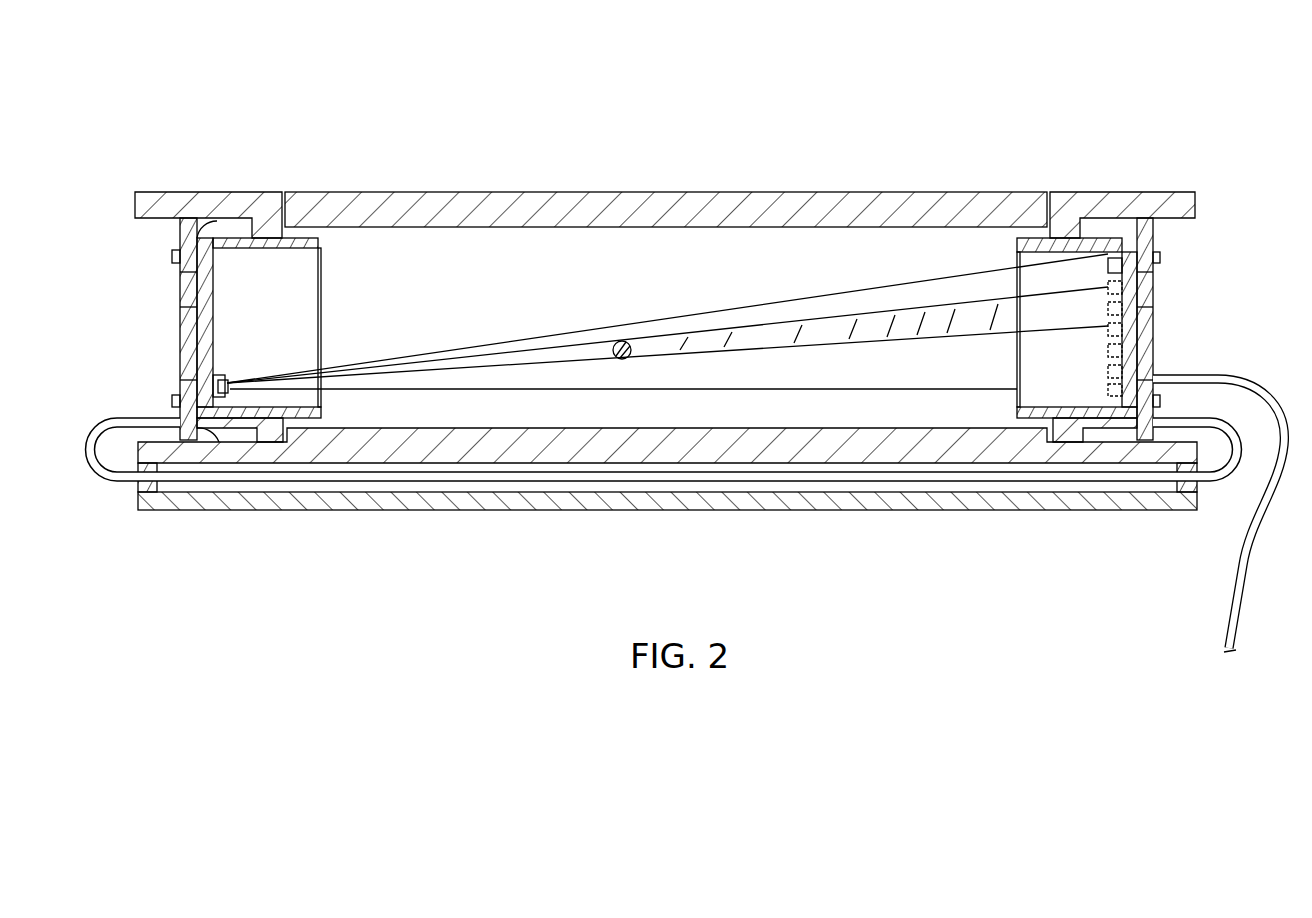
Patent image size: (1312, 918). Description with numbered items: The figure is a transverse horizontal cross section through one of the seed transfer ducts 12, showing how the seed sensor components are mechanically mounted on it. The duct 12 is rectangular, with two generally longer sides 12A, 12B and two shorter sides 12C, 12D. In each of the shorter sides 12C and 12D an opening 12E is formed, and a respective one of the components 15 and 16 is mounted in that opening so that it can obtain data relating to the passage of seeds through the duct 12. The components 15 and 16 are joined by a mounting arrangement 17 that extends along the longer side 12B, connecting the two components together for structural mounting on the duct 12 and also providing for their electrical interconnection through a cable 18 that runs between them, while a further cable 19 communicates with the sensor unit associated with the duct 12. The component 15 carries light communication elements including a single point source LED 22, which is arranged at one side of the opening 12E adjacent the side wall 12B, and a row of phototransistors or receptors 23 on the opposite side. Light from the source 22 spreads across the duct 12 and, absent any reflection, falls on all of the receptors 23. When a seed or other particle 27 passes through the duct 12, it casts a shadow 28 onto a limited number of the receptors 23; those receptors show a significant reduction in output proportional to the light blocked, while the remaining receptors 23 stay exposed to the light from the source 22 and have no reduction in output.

The seed transfer duct 12 is at (666, 351).
The longer side of duct 12A is at (747, 190).
The longer side of duct 12B is at (778, 465).
The shorter side of duct 12C is at (322, 266).
The shorter side of duct 12D is at (1023, 228).
The opening 12E is at (262, 192).
The component 15 is at (182, 340).
The component 16 is at (1143, 318).
The mounting arrangement 17 is at (456, 512).
The cable 18 is at (127, 481).
The further cable 19 is at (1228, 655).
The single point source LED 22 is at (226, 372).
The receptors 23 is at (1150, 262).
The particle 27 is at (622, 342).
The shadow 28 is at (778, 332).